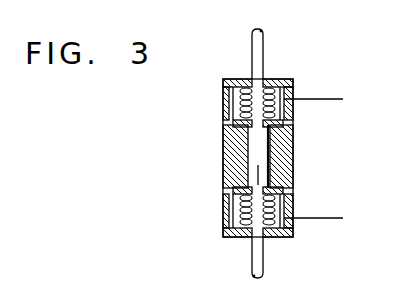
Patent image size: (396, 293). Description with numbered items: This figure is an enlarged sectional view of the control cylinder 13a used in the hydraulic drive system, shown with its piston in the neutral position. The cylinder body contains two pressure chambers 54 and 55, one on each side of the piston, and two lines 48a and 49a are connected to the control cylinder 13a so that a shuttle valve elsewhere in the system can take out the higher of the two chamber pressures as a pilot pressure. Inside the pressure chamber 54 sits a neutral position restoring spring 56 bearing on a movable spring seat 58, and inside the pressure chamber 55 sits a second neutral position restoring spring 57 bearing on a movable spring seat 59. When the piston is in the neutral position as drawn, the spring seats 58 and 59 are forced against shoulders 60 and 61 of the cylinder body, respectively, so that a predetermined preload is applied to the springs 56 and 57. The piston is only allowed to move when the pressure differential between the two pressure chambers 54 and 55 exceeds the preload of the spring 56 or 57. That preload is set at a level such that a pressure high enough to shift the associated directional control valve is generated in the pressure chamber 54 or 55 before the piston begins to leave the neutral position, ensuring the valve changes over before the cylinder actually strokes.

The control cylinder 13a is at (300, 131).
The line 48a is at (322, 98).
The line 49a is at (324, 219).
The pressure chamber 54 is at (236, 100).
The pressure chamber 55 is at (232, 214).
The neutral position restoring spring 56 is at (240, 82).
The neutral position restoring spring 57 is at (240, 238).
The movable spring seat 58 is at (235, 121).
The movable spring seat 59 is at (235, 196).
The shoulder 60 is at (232, 138).
The shoulder 61 is at (236, 190).